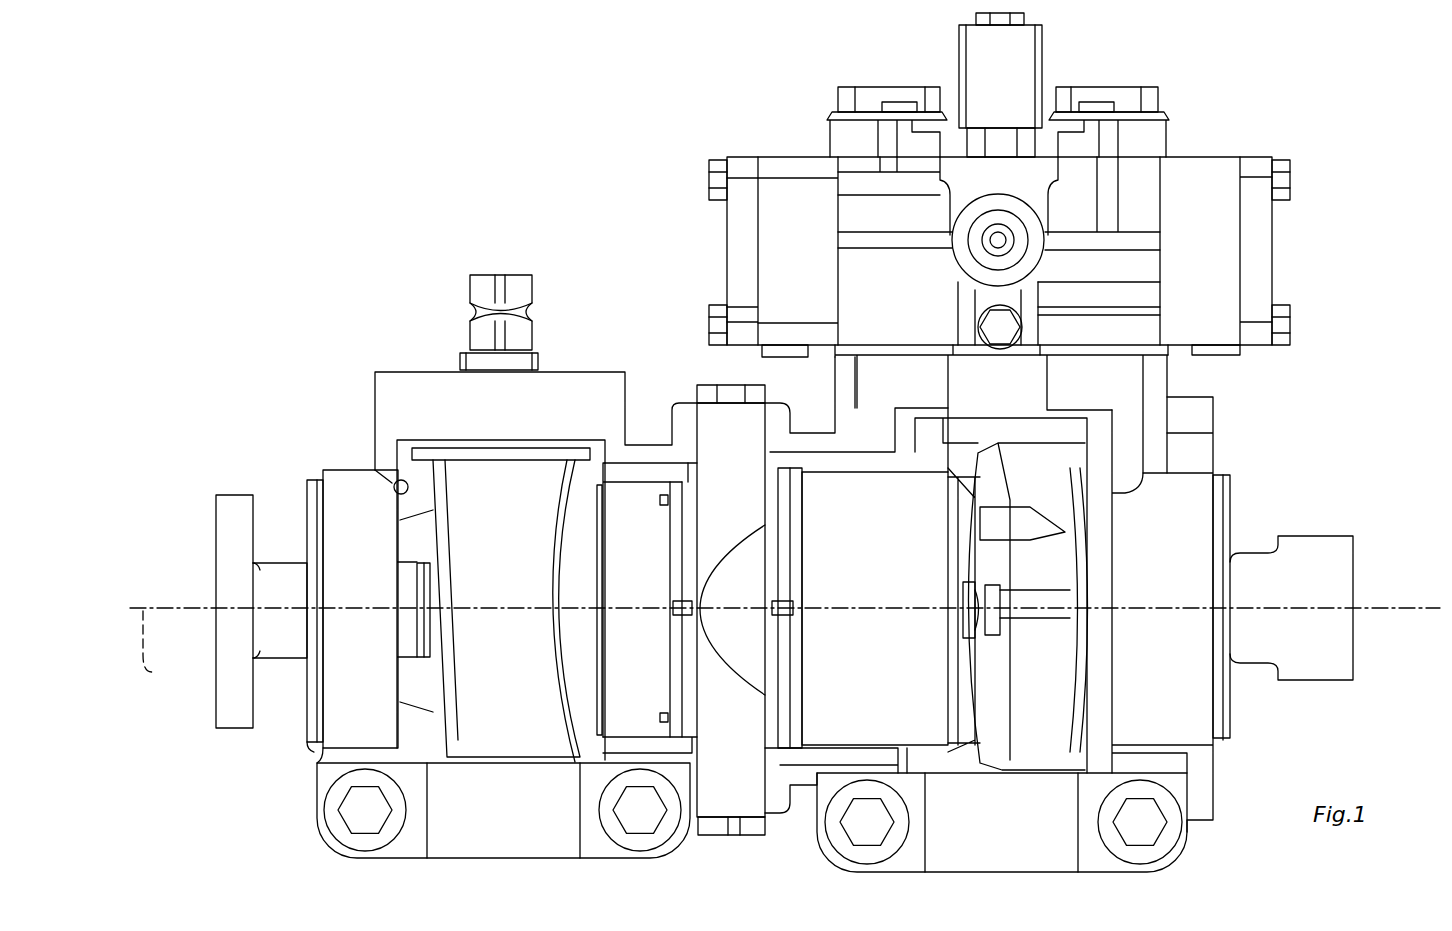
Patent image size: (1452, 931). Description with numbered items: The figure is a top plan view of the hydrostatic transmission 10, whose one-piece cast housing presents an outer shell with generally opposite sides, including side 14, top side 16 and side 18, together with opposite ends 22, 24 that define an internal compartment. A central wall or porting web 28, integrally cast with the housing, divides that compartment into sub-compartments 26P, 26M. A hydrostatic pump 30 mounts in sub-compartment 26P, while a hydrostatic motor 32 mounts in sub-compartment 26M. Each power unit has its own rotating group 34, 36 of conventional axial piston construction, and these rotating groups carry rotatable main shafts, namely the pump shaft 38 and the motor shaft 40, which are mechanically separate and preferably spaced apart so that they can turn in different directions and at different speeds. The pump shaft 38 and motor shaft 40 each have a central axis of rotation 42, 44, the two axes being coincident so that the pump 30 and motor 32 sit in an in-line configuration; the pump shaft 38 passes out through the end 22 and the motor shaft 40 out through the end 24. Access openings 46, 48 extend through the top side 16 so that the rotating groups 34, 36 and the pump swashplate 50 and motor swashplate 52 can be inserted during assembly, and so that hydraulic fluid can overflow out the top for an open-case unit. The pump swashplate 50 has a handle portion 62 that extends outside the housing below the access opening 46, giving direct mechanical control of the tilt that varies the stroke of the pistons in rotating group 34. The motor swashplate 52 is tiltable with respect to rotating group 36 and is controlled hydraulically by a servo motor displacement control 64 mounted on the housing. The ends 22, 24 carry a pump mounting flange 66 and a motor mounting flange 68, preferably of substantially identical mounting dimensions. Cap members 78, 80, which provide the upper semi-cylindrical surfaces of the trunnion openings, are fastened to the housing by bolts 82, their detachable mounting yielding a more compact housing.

The hydrostatic transmission 10 is at (575, 168).
The side 14 is at (775, 818).
The top side 16 is at (377, 704).
The side 18 is at (685, 398).
The end 22 is at (322, 480).
The end 24 is at (1213, 448).
The sub-compartment 26P is at (667, 745).
The sub-compartment 26M is at (905, 748).
The porting web 28 is at (748, 765).
The hydrostatic pump 30 is at (593, 753).
The hydrostatic motor 32 is at (868, 748).
The rotating group 34 is at (637, 502).
The rotating group 36 is at (897, 688).
The pump shaft 38 is at (296, 662).
The motor shaft 40 is at (1255, 660).
The axis of rotation 42 is at (198, 611).
The axis of rotation 44 is at (1425, 608).
The access opening 46 is at (395, 487).
The access opening 48 is at (1098, 440).
The pump swashplate 50 is at (513, 520).
The motor swashplate 52 is at (1054, 692).
The handle portion 62 is at (522, 280).
The servo motor displacement control 64 is at (1264, 146).
The pump mounting flange 66 is at (313, 750).
The motor mounting flange 68 is at (1230, 723).
The cap member 78 is at (510, 835).
The cap member 80 is at (1040, 858).
The bolts 82 is at (355, 812).